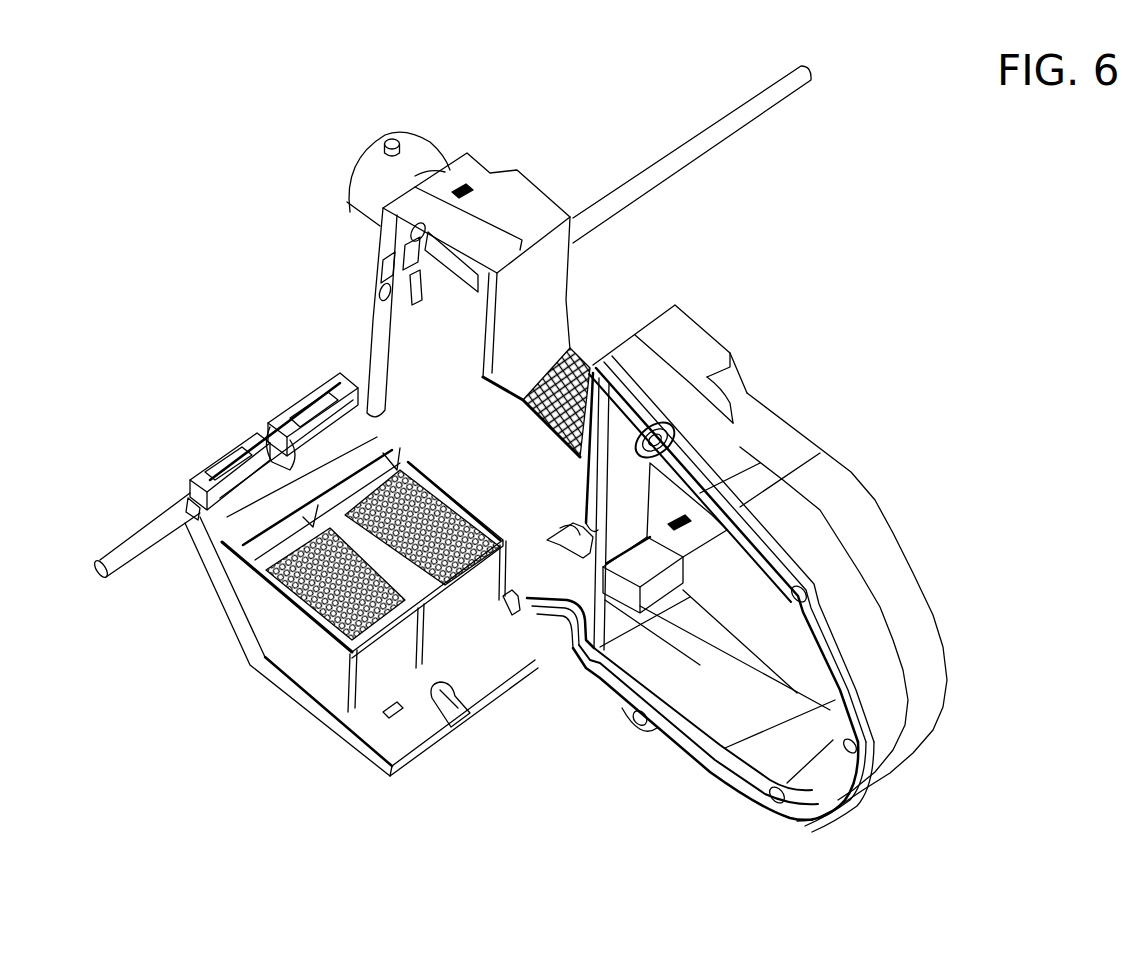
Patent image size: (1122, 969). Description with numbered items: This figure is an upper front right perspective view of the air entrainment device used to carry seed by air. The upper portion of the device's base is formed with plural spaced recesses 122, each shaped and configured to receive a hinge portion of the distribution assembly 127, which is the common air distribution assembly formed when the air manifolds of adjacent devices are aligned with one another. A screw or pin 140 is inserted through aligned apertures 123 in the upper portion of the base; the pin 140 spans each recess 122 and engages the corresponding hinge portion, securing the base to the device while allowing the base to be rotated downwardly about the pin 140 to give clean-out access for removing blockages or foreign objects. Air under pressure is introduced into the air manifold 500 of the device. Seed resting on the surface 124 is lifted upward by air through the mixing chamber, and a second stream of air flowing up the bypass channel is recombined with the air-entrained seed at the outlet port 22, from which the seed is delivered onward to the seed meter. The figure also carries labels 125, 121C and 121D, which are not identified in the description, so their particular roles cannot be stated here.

The outlet port 22 is at (364, 150).
The screw or pin 140 is at (698, 158).
The surface 124 is at (577, 355).
The guide rib 125 is at (346, 472).
The recess 122 is at (262, 423).
The apertures 123 is at (187, 486).
The distribution assembly 127 is at (851, 471).
The housing frame rim 121C is at (453, 621).
The tray base plate 121D is at (381, 678).
The air manifold 500 is at (744, 597).